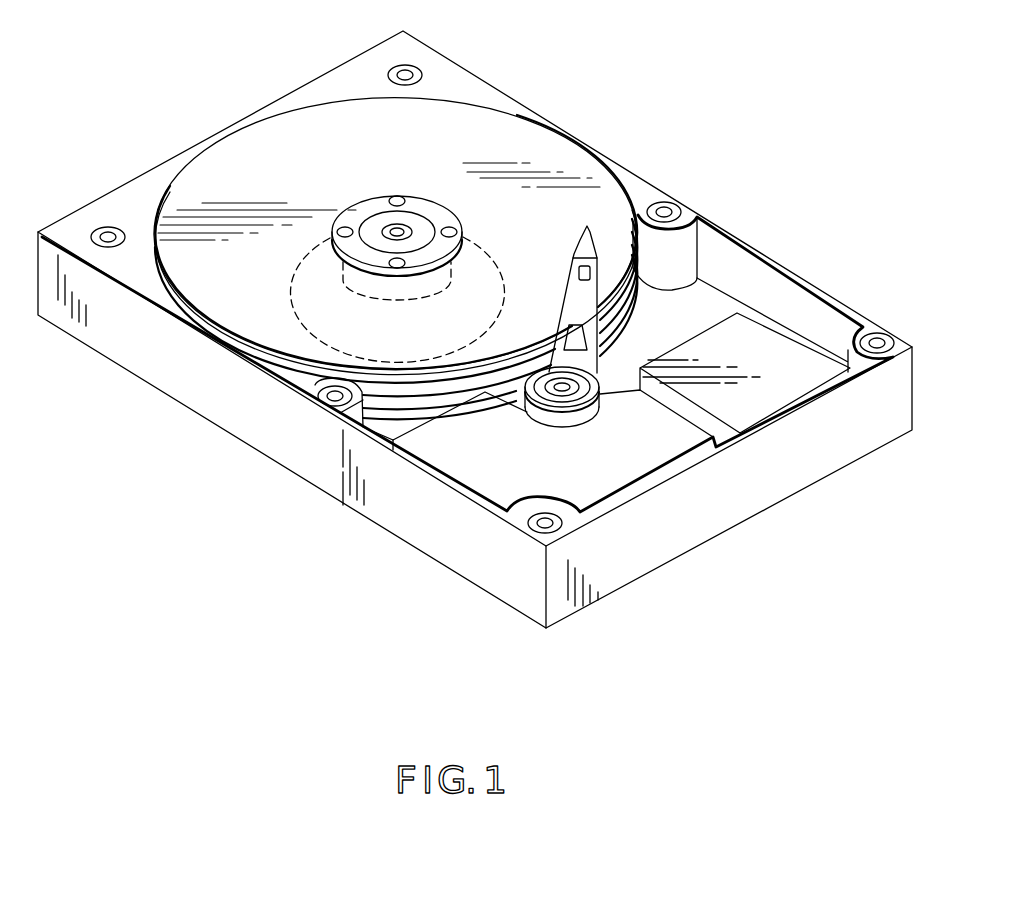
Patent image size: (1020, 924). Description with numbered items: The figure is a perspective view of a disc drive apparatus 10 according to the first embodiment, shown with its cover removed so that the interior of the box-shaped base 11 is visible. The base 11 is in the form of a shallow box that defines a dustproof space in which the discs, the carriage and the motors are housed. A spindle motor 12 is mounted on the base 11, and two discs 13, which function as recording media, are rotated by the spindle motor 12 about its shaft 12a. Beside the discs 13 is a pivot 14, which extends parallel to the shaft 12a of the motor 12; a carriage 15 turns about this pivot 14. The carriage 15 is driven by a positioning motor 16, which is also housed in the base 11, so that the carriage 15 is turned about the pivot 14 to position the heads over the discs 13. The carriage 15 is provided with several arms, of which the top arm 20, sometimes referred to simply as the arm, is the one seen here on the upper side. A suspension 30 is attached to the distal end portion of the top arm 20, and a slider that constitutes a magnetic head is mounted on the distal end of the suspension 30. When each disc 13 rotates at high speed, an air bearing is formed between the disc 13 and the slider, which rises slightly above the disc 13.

The disc drive apparatus 10 is at (790, 128).
The base 11 is at (248, 427).
The spindle motor 12 is at (292, 312).
The shaft 12a is at (413, 222).
The disc 13 is at (526, 160).
The pivot 14 is at (577, 397).
The carriage 15 is at (597, 364).
The positioning motor 16 is at (490, 478).
The top arm 20 is at (592, 302).
The suspension 30 is at (593, 232).